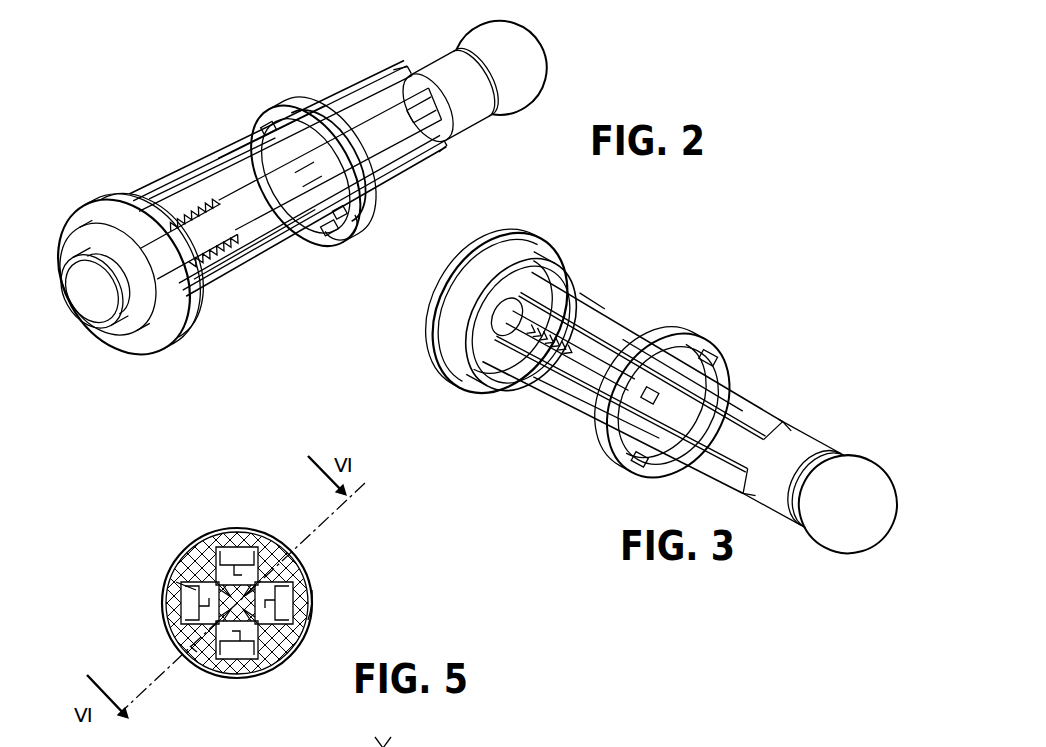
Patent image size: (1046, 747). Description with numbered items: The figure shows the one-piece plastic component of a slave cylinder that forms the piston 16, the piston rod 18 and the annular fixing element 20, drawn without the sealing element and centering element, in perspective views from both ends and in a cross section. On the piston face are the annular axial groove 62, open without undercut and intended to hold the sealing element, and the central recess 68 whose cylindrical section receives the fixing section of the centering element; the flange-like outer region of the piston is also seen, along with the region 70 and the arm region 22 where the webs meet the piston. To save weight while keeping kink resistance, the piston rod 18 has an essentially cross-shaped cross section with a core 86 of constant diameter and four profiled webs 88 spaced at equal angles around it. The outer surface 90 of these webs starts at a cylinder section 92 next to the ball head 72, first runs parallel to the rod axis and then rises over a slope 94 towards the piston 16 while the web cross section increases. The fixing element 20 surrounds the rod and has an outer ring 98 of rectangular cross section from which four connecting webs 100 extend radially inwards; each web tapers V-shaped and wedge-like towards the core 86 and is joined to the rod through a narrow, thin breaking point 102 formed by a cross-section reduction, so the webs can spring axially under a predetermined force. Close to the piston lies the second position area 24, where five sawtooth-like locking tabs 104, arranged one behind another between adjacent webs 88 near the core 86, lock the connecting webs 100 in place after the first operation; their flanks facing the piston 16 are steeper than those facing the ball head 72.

In FIG. 2, the piston 16 is at (173, 337).
In FIG. 3, the piston 16 is at (538, 254).
In FIG. 5, the piston 16 is at (239, 530).
In FIG. 2, the piston rod 18 is at (473, 113).
In FIG. 3, the piston rod 18 is at (798, 451).
In FIG. 5, the piston rod 18 is at (215, 532).
In FIG. 2, the fixing element 20 is at (305, 116).
In FIG. 3, the fixing element 20 is at (678, 335).
In FIG. 5, the fixing element 20 is at (276, 543).
In FIG. 2, the arm 22 is at (285, 156).
In FIG. 3, the arm 22 is at (716, 400).
In FIG. 2, the second position area 24 is at (182, 201).
In FIG. 3, the second position area 24 is at (556, 393).
In FIG. 2, the axial groove 62 is at (143, 327).
In FIG. 2, the central recess 68 is at (93, 290).
In FIG. 2, the flange 70 is at (118, 206).
In FIG. 3, the flange 70 is at (462, 378).
In FIG. 2, the ball head 72 is at (508, 63).
In FIG. 3, the ball head 72 is at (847, 504).
In FIG. 5, the core 86 is at (313, 583).
In FIG. 2, the profiled webs 88 is at (410, 119).
In FIG. 3, the profiled webs 88 is at (588, 314).
In FIG. 5, the profiled webs 88 is at (175, 578).
In FIG. 2, the outer surface 90 is at (350, 95).
In FIG. 3, the outer surface 90 is at (712, 460).
In FIG. 5, the outer surface 90 is at (165, 600).
In FIG. 2, the cylinder section 92 is at (478, 78).
In FIG. 3, the cylinder section 92 is at (804, 483).
In FIG. 2, the slope 94 is at (207, 175).
In FIG. 3, the slope 94 is at (603, 430).
In FIG. 5, the slope 94 is at (164, 630).
In FIG. 2, the outer ring 98 is at (317, 237).
In FIG. 3, the outer ring 98 is at (712, 353).
In FIG. 5, the outer ring 98 is at (260, 680).
In FIG. 2, the connecting webs 100 is at (267, 133).
In FIG. 3, the connecting webs 100 is at (648, 468).
In FIG. 5, the connecting webs 100 is at (192, 668).
In FIG. 2, the breaking point 102 is at (317, 183).
In FIG. 5, the breaking point 102 is at (243, 682).
In FIG. 2, the locking tabs 104 is at (173, 210).
In FIG. 3, the locking tabs 104 is at (505, 385).